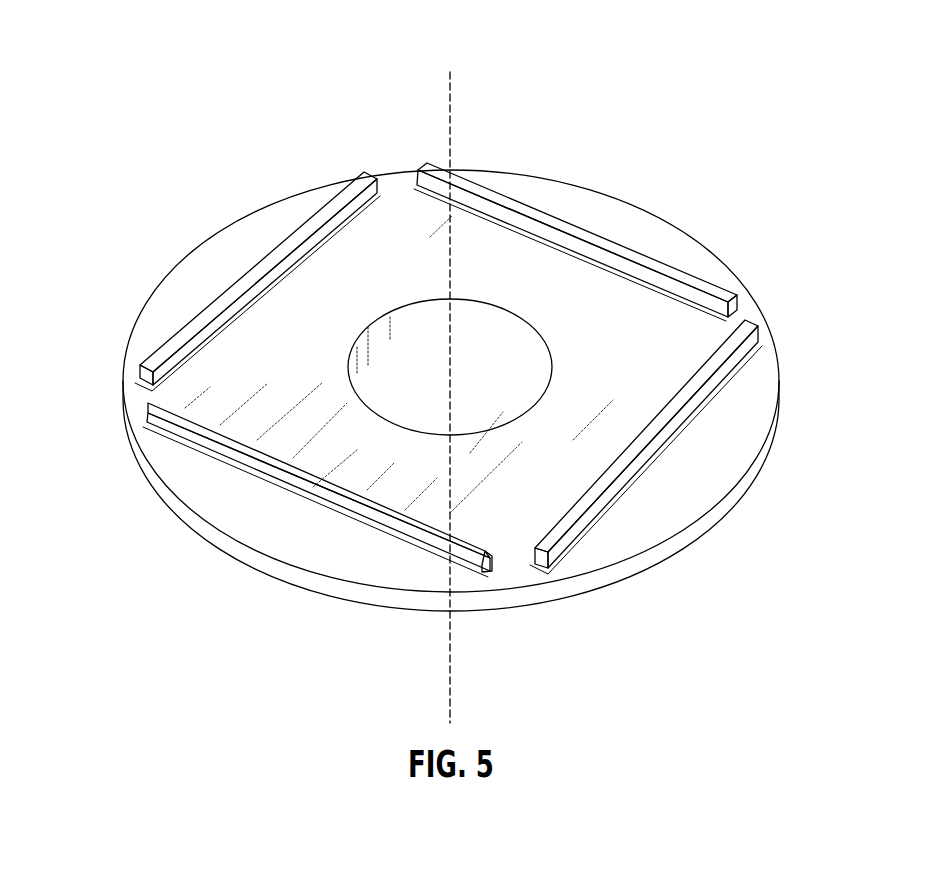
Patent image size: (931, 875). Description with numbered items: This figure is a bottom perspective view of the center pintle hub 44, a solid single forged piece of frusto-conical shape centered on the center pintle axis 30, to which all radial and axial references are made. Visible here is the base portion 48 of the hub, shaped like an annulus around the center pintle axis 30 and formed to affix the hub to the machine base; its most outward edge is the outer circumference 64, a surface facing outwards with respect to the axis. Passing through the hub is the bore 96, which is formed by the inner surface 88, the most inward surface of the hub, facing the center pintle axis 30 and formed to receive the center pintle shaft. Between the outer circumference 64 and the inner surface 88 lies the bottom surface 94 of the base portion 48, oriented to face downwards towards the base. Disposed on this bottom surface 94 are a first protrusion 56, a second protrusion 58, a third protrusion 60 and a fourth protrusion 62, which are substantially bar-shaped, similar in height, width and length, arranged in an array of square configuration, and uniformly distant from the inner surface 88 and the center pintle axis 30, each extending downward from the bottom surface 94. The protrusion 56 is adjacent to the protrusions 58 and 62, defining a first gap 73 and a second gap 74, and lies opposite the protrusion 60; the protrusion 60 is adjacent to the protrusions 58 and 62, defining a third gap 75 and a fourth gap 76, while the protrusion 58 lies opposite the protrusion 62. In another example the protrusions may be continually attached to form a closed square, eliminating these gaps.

The center pintle hub 44 is at (240, 30).
The center pintle axis 30 is at (450, 80).
The base portion 48 is at (270, 215).
The first protrusion 56 is at (307, 490).
The second protrusion 58 is at (243, 273).
The third protrusion 60 is at (587, 223).
The fourth protrusion 62 is at (662, 438).
The outer circumference 64 is at (330, 594).
The first gap 73 is at (146, 402).
The second gap 74 is at (506, 588).
The third gap 75 is at (397, 183).
The fourth gap 76 is at (750, 318).
The inner surface 88 is at (463, 310).
The bottom surface 94 is at (207, 365).
The bore 96 is at (513, 357).